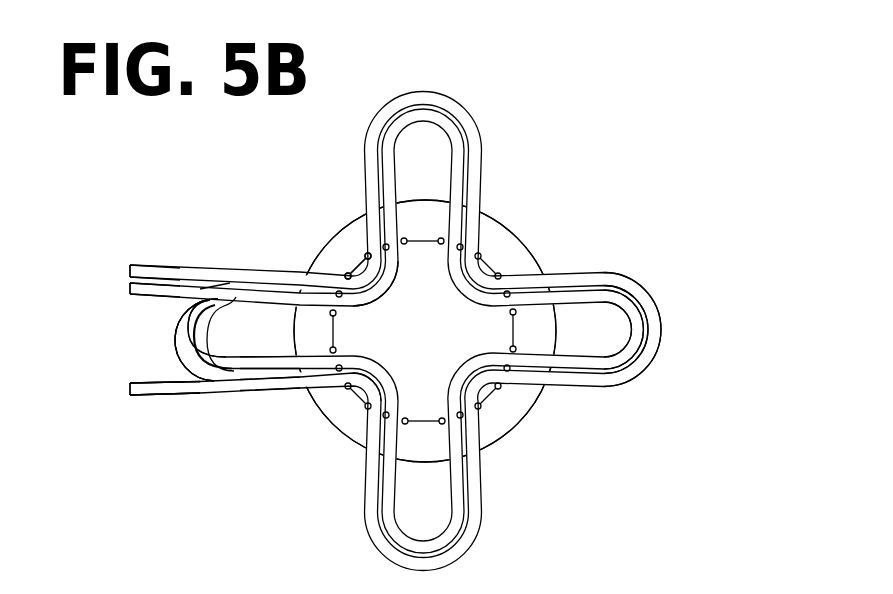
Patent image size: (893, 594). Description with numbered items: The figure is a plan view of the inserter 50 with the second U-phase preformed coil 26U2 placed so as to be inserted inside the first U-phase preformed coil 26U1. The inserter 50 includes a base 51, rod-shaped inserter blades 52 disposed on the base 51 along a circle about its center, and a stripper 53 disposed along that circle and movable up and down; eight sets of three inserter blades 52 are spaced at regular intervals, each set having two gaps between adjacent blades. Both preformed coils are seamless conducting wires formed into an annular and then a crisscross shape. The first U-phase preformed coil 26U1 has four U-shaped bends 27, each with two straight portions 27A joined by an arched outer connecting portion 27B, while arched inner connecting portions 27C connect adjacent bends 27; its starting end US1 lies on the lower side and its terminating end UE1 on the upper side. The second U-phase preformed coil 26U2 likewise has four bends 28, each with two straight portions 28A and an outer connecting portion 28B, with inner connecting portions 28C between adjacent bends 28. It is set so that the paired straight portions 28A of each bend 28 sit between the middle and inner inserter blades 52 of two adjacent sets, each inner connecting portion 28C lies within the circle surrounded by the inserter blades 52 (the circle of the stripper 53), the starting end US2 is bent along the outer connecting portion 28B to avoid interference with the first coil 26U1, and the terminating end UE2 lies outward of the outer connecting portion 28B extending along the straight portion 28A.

The U-shaped bend 27 is at (217, 384).
The straight portion 27A is at (300, 394).
The outer connecting portion 27B is at (200, 383).
The inner connecting portion 27C is at (385, 373).
The U-shaped bend 28 is at (234, 299).
The straight portion 28A is at (300, 353).
The outer connecting portion 28B is at (192, 297).
The inner connecting portion 28C is at (382, 305).
The inserter 50 is at (544, 236).
The base 51 is at (500, 224).
The inserter blade 52 is at (441, 244).
The stripper 53 is at (364, 258).
The terminating end of winding UE1 is at (138, 266).
The terminating end of winding UE2 is at (138, 295).
The starting end of winding US1 is at (138, 396).
The starting end of winding US2 is at (190, 333).
The first U-phase preformed coil 26U1 is at (660, 300).
The second U-phase preformed coil 26U2 is at (652, 328).